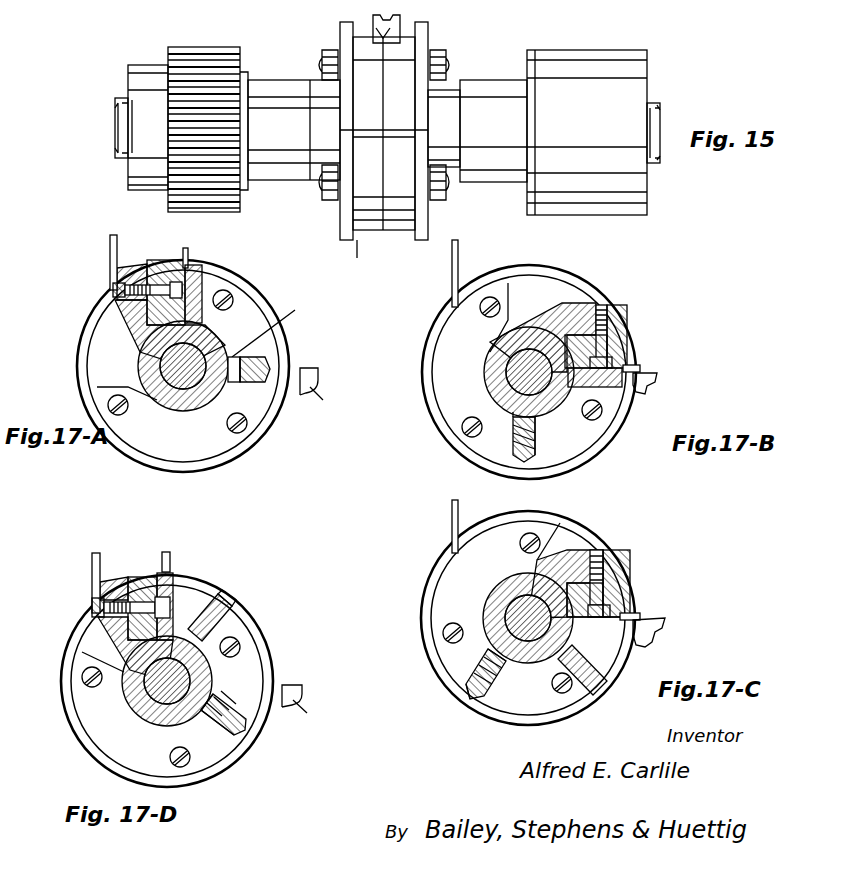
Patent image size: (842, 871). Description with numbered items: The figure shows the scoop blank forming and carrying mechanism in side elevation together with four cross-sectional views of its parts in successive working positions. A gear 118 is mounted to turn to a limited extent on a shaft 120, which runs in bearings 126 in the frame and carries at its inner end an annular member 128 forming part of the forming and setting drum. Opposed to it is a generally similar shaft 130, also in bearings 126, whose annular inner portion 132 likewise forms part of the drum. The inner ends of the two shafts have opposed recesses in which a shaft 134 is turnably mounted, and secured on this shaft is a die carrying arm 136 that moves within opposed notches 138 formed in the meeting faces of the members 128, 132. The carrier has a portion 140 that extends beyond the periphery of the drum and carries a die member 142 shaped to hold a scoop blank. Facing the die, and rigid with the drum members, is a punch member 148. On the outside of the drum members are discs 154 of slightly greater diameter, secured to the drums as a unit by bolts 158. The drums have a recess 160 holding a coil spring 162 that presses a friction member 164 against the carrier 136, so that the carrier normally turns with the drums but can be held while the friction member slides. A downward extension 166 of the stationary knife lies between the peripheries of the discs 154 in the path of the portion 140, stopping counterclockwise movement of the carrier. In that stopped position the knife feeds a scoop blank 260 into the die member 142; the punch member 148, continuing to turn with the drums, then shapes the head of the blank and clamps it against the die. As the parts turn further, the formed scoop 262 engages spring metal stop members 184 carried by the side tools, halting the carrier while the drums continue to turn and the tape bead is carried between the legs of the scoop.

In FIG. 15, the gear 118 is at (208, 58).
In FIG. 15, the shaft 120 is at (113, 125).
In FIG. 15, the bearings 126 is at (270, 90).
In FIG. 15, the annular member 128 is at (367, 256).
In FIG. 15, the shaft 130 is at (661, 116).
In FIG. 15, the annular inner portion 132 is at (405, 58).
In FIG. 17A, the annular inner portion 132 is at (238, 318).
In FIG. 17B, the annular inner portion 132 is at (562, 442).
In FIG. 17C, the annular inner portion 132 is at (493, 693).
In FIG. 17D, the annular inner portion 132 is at (205, 773).
In FIG. 17A, the shaft 134 is at (187, 388).
In FIG. 17B, the shaft 134 is at (529, 372).
In FIG. 17C, the shaft 134 is at (522, 633).
In FIG. 17D, the shaft 134 is at (134, 708).
In FIG. 17A, the die carrying arm 136 is at (120, 320).
In FIG. 17B, the die carrying arm 136 is at (560, 315).
In FIG. 17C, the die carrying arm 136 is at (565, 550).
In FIG. 17D, the die carrying arm 136 is at (100, 662).
In FIG. 17A, the notches 138 is at (97, 348).
In FIG. 17B, the notches 138 is at (522, 297).
In FIG. 17C, the notches 138 is at (528, 618).
In FIG. 17D, the notches 138 is at (183, 610).
In FIG. 15, the portion 140 is at (398, 22).
In FIG. 17A, the portion 140 is at (120, 275).
In FIG. 17B, the portion 140 is at (608, 312).
In FIG. 17C, the portion 140 is at (618, 570).
In FIG. 17D, the portion 140 is at (115, 581).
In FIG. 17A, the die member 142 is at (158, 268).
In FIG. 17B, the die member 142 is at (618, 345).
In FIG. 17C, the die member 142 is at (622, 593).
In FIG. 17D, the die member 142 is at (138, 577).
In FIG. 17A, the punch member 148 is at (226, 300).
In FIG. 17B, the punch member 148 is at (618, 388).
In FIG. 17C, the punch member 148 is at (590, 690).
In FIG. 17D, the punch member 148 is at (232, 610).
In FIG. 15, the discs 154 is at (339, 124).
In FIG. 17A, the discs 154 is at (279, 341).
In FIG. 17B, the discs 154 is at (447, 435).
In FIG. 17C, the discs 154 is at (545, 717).
In FIG. 15, the bolts 158 is at (322, 186).
In FIG. 17A, the bolts 158 is at (228, 297).
In FIG. 17C, the bolts 158 is at (441, 633).
In FIG. 17A, the recess 160 is at (258, 350).
In FIG. 17B, the recess 160 is at (513, 462).
In FIG. 17C, the recess 160 is at (472, 688).
In FIG. 17D, the recess 160 is at (234, 728).
In FIG. 17A, the coil spring 162 is at (257, 383).
In FIG. 17B, the coil spring 162 is at (537, 440).
In FIG. 17C, the coil spring 162 is at (483, 667).
In FIG. 17D, the coil spring 162 is at (213, 725).
In FIG. 17A, the friction member 164 is at (277, 331).
In FIG. 17B, the friction member 164 is at (513, 415).
In FIG. 17C, the friction member 164 is at (487, 652).
In FIG. 17D, the friction member 164 is at (207, 702).
In FIG. 17A, the downward extension 166 is at (113, 290).
In FIG. 17B, the downward extension 166 is at (452, 300).
In FIG. 17C, the downward extension 166 is at (452, 545).
In FIG. 17D, the downward extension 166 is at (92, 600).
In FIG. 17A, the stop members 184 is at (321, 386).
In FIG. 17B, the stop members 184 is at (650, 381).
In FIG. 17C, the stop members 184 is at (647, 622).
In FIG. 17D, the stop members 184 is at (304, 704).
In FIG. 17A, the scoop blank 260 is at (188, 252).
In FIG. 17D, the scoop blank 260 is at (170, 570).
In FIG. 17B, the formed scoop 262 is at (638, 369).
In FIG. 17C, the formed scoop 262 is at (640, 611).